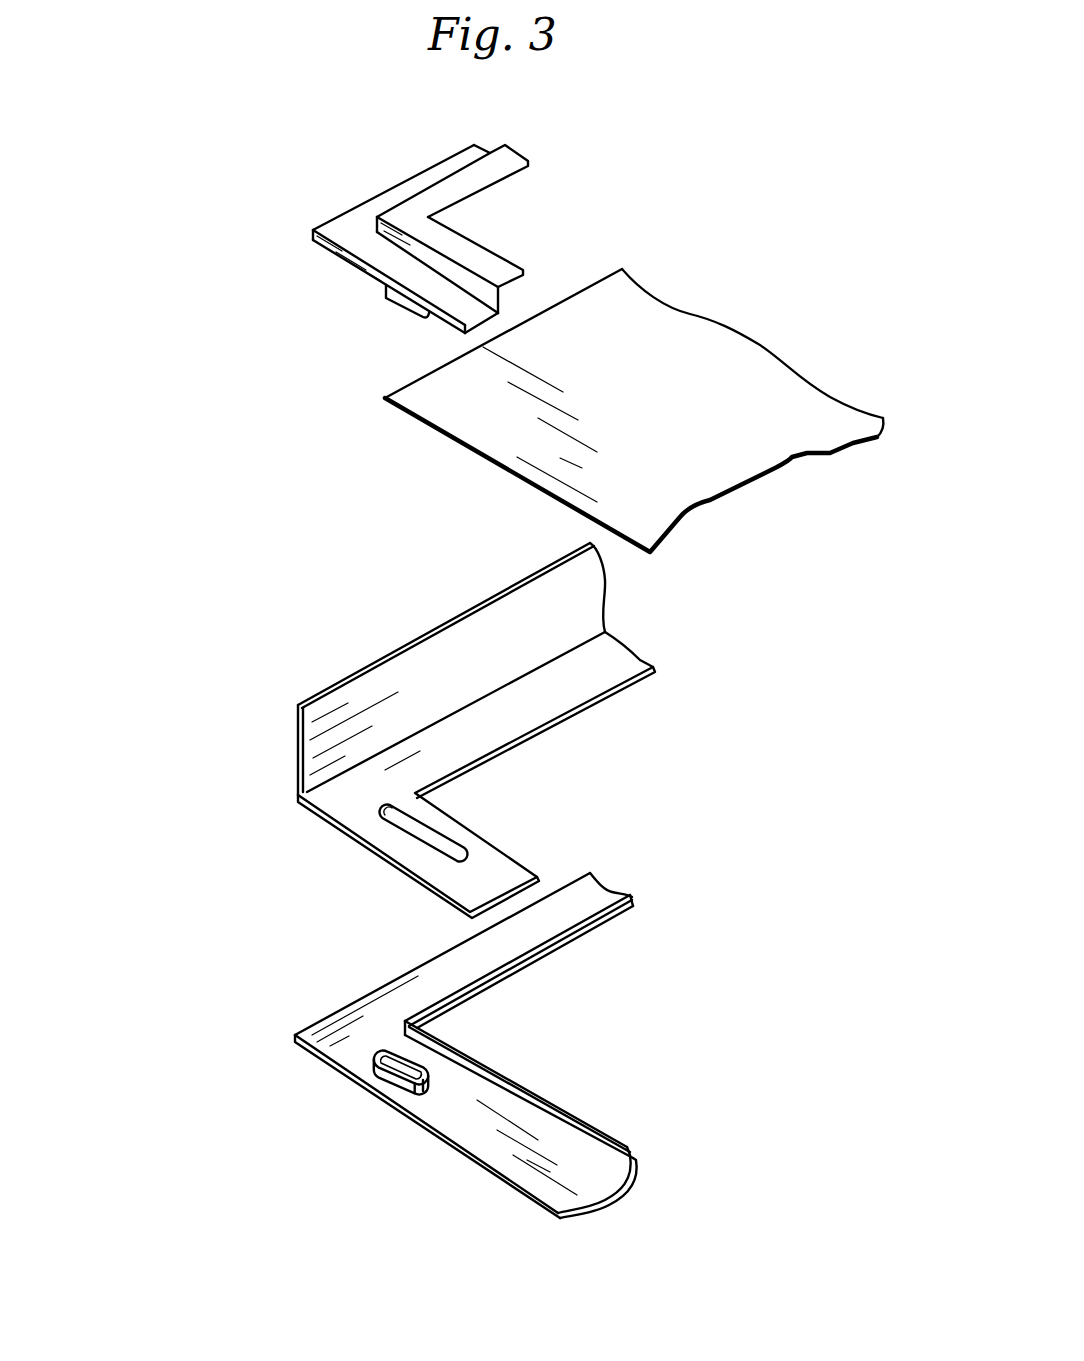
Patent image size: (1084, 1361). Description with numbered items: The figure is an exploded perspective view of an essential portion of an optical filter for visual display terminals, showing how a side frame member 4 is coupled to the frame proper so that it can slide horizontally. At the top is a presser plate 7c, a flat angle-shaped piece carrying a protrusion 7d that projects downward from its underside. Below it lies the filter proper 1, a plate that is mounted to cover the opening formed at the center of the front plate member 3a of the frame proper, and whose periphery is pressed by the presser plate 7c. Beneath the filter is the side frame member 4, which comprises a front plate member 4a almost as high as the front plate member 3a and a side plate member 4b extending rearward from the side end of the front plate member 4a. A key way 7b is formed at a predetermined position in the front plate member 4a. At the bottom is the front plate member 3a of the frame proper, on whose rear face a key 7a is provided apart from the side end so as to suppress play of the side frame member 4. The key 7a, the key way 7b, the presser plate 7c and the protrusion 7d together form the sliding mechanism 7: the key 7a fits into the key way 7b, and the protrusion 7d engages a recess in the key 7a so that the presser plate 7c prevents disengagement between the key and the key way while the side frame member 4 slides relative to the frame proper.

The filter proper 1 is at (687, 353).
The front plate member 3a is at (445, 1045).
The side frame member 4 is at (440, 716).
The front plate member 4a is at (473, 716).
The side plate member 4b is at (417, 693).
The sliding mechanism 7 is at (215, 1017).
The key 7a is at (373, 1070).
The key way 7b is at (437, 835).
The presser plate 7c is at (412, 242).
The protrusion 7d is at (397, 303).